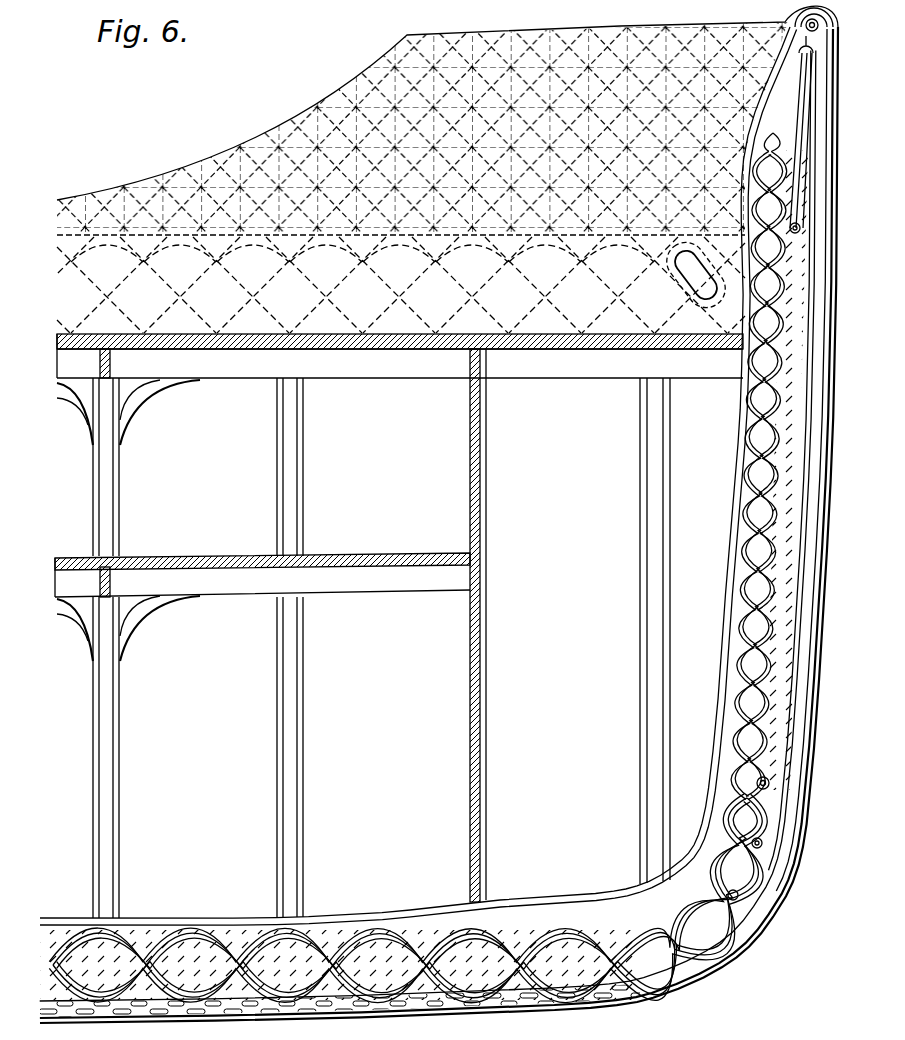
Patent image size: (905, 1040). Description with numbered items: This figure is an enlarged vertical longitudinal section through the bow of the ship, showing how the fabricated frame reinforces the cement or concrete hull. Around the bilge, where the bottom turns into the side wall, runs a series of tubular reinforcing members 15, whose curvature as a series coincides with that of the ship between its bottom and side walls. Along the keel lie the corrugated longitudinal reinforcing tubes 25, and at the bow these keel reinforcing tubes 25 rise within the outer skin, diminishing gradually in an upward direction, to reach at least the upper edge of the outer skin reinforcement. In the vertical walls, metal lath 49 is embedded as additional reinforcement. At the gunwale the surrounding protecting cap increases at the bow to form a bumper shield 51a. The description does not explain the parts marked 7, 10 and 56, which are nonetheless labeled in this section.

The hull shell plating 7 is at (830, 402).
The rivet fastening 10 is at (758, 876).
The tubular reinforcing members 15 is at (744, 902).
The longitudinal reinforcing tubes 25 is at (406, 896).
The metal lath 49 is at (484, 644).
The bumper shield 51a is at (832, 333).
The eye fastening 56 is at (806, 28).